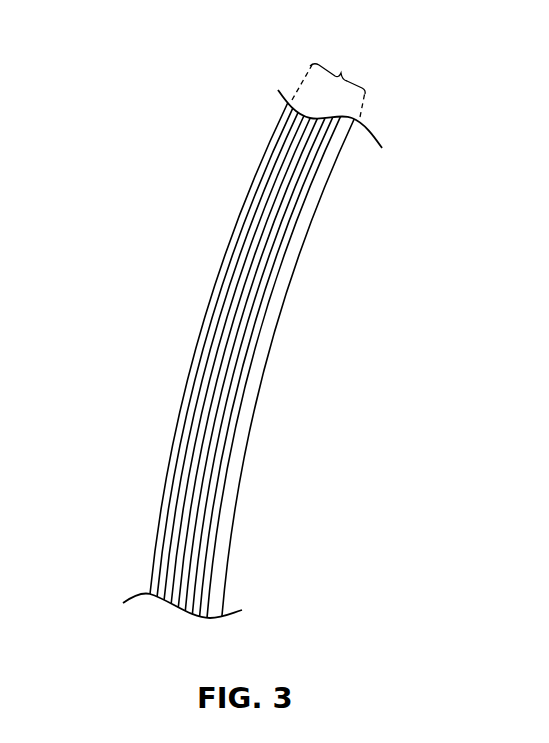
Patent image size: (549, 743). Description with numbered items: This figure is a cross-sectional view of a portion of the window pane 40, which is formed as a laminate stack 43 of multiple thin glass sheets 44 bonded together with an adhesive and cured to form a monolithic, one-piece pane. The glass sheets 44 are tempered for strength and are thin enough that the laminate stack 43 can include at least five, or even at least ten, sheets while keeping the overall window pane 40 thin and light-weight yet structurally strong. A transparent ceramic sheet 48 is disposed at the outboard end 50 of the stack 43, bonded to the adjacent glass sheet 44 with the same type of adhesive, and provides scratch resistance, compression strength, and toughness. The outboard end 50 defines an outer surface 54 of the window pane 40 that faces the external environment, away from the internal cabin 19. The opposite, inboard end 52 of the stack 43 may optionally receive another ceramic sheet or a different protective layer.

The window pane 40 is at (216, 329).
The laminate stack 43 is at (328, 79).
The glass sheets 44 is at (218, 315).
The transparent ceramic sheet 48 is at (227, 265).
The outboard end 50 is at (195, 360).
The inboard end 52 is at (265, 365).
The outer surface 54 is at (173, 430).
The internal cabin 19 is at (310, 420).